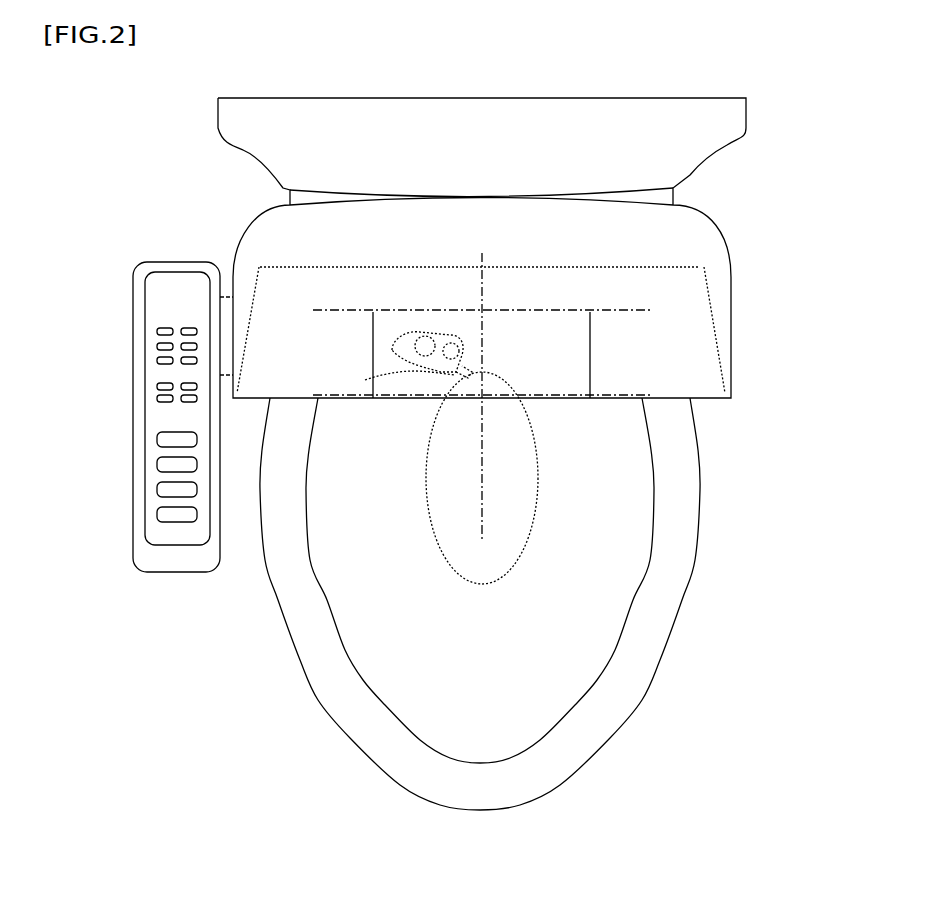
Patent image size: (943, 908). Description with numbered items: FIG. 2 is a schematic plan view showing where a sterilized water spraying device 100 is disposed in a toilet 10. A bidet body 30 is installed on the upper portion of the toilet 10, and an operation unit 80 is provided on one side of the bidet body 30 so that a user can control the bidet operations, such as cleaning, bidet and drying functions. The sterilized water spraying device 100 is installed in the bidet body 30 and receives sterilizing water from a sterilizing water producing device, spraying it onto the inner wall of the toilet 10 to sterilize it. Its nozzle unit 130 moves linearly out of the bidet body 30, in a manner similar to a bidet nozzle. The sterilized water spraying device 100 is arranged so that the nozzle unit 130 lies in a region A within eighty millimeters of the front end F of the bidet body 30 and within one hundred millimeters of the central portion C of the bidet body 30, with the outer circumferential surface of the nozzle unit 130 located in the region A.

The toilet 10 is at (657, 628).
The bidet body 30 is at (693, 240).
The operation unit 80 is at (145, 393).
The sterilized water spraying device 100 is at (409, 330).
The nozzle unit 130 is at (367, 379).
The region A is at (565, 352).
The front end of the bidet body F is at (643, 398).
The central portion of the bidet body C is at (483, 470).